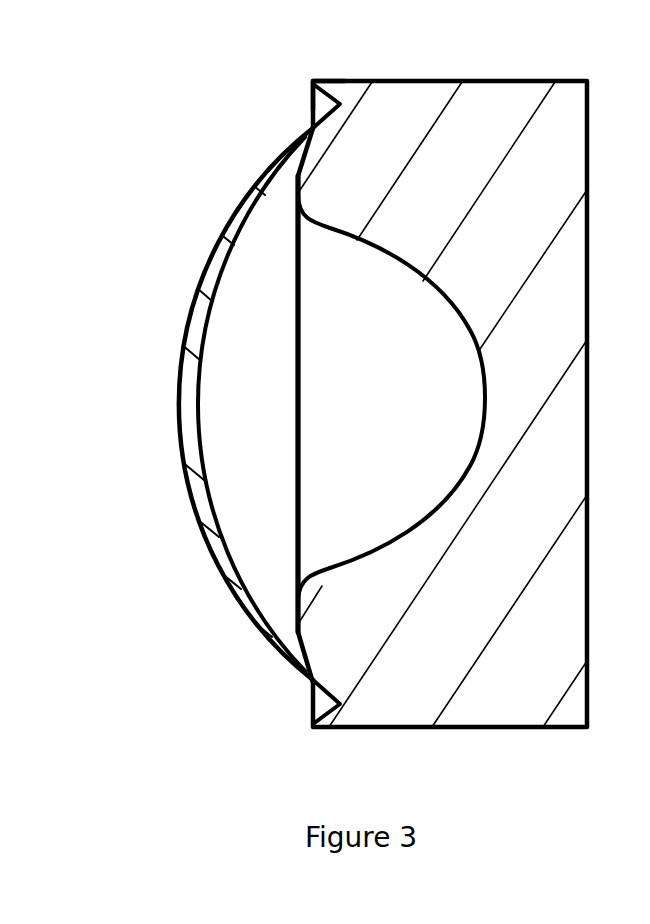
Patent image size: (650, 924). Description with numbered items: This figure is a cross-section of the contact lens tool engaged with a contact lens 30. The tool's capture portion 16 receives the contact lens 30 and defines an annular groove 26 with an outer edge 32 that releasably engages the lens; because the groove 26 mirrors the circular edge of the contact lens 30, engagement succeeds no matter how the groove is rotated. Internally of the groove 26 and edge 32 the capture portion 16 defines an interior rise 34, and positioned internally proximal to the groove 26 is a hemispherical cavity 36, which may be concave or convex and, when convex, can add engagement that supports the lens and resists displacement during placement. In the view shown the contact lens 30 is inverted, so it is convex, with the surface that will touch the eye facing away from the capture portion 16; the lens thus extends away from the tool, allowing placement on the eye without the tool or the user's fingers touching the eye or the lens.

The capture portion 16 is at (442, 404).
The annular groove 26 is at (312, 107).
The contact lens 30 is at (182, 399).
The outer edge 32 is at (312, 82).
The interior rise 34 is at (300, 193).
The hemispherical cavity 36 is at (391, 398).